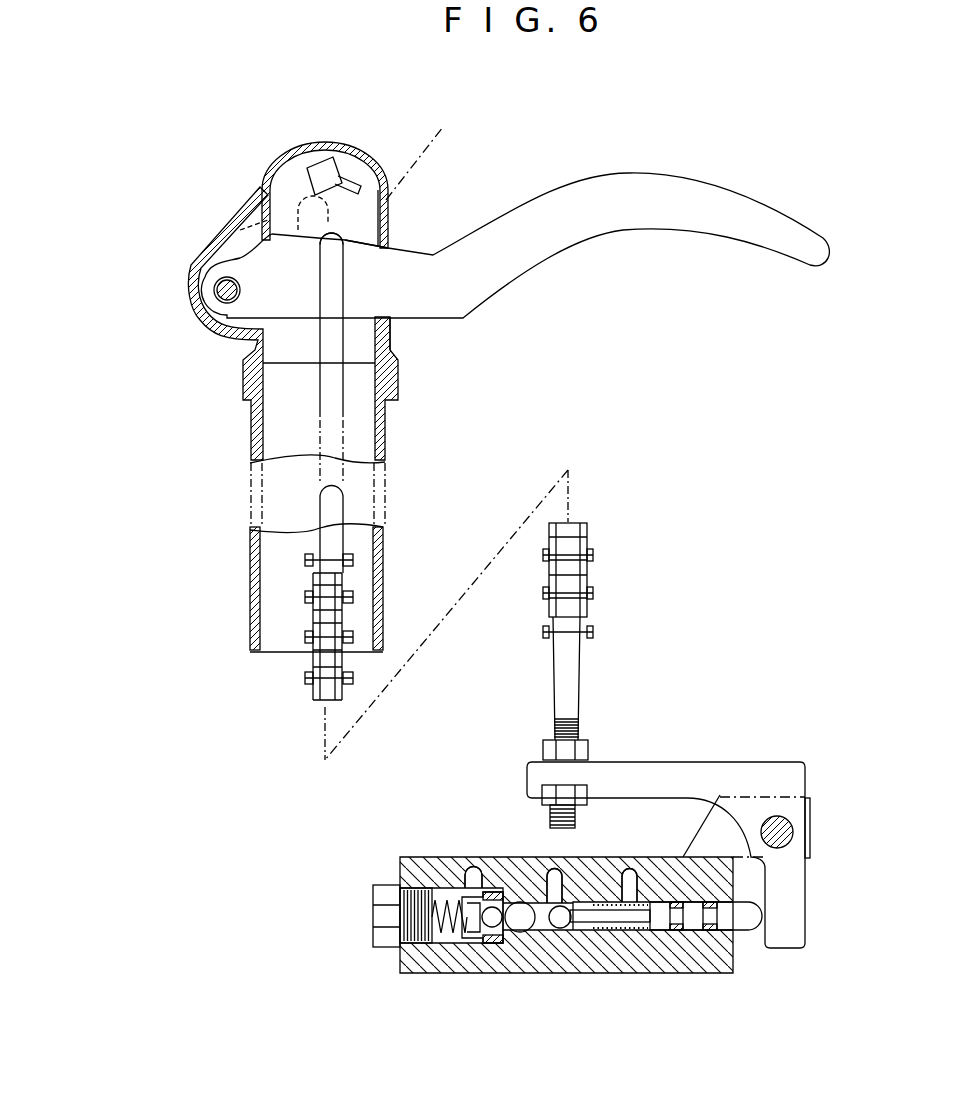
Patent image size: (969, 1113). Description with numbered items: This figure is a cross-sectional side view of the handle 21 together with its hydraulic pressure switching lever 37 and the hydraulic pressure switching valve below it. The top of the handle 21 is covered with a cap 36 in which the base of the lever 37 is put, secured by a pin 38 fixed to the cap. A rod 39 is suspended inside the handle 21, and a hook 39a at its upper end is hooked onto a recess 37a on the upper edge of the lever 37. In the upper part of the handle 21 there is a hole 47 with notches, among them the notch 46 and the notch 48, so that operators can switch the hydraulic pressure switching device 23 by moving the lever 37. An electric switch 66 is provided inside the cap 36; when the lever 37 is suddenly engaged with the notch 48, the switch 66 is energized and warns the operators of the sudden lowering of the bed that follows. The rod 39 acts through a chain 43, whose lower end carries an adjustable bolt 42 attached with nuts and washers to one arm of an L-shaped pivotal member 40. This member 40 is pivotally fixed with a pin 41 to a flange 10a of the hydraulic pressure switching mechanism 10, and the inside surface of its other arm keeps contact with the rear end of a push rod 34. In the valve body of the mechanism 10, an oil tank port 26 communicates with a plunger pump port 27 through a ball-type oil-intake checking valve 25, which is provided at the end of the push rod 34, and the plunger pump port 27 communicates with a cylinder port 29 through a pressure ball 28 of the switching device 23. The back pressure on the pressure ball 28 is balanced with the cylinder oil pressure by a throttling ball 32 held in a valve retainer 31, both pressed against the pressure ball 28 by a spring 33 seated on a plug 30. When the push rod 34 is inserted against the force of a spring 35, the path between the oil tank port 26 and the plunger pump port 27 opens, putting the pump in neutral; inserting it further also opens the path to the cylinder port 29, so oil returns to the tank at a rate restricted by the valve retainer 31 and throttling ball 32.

The hydraulic pressure switching mechanism 10 is at (425, 867).
The flange 10a is at (811, 812).
The handle 21 is at (237, 585).
The hydraulic pressure switching device 23 is at (529, 882).
The ball-type oil-intake checking valve 25 is at (560, 922).
The oil tank port 26 is at (627, 870).
The plunger pump port 27 is at (562, 870).
The pressure ball 28 is at (520, 908).
The cylinder port 29 is at (470, 867).
The plug 30 is at (372, 904).
The valve retainer 31 is at (492, 897).
The throttling ball 32 is at (488, 922).
The spring 33 is at (440, 900).
The push rod 34 is at (743, 923).
The spring 35 is at (625, 928).
The cap 36 is at (273, 172).
The hydraulic pressure switching lever 37 is at (626, 222).
The recess 37a is at (355, 246).
The pin 38 is at (220, 281).
The rod 39 is at (313, 517).
The hook 39a is at (323, 242).
The L-shaped pivotal member 40 is at (733, 768).
The pin 41 is at (792, 838).
The adjustable bolt 42 is at (550, 668).
The chain 43 is at (310, 697).
The notch 46 is at (403, 328).
The hole 47 is at (383, 218).
The notch 48 is at (386, 198).
The electric switch 66 is at (347, 155).